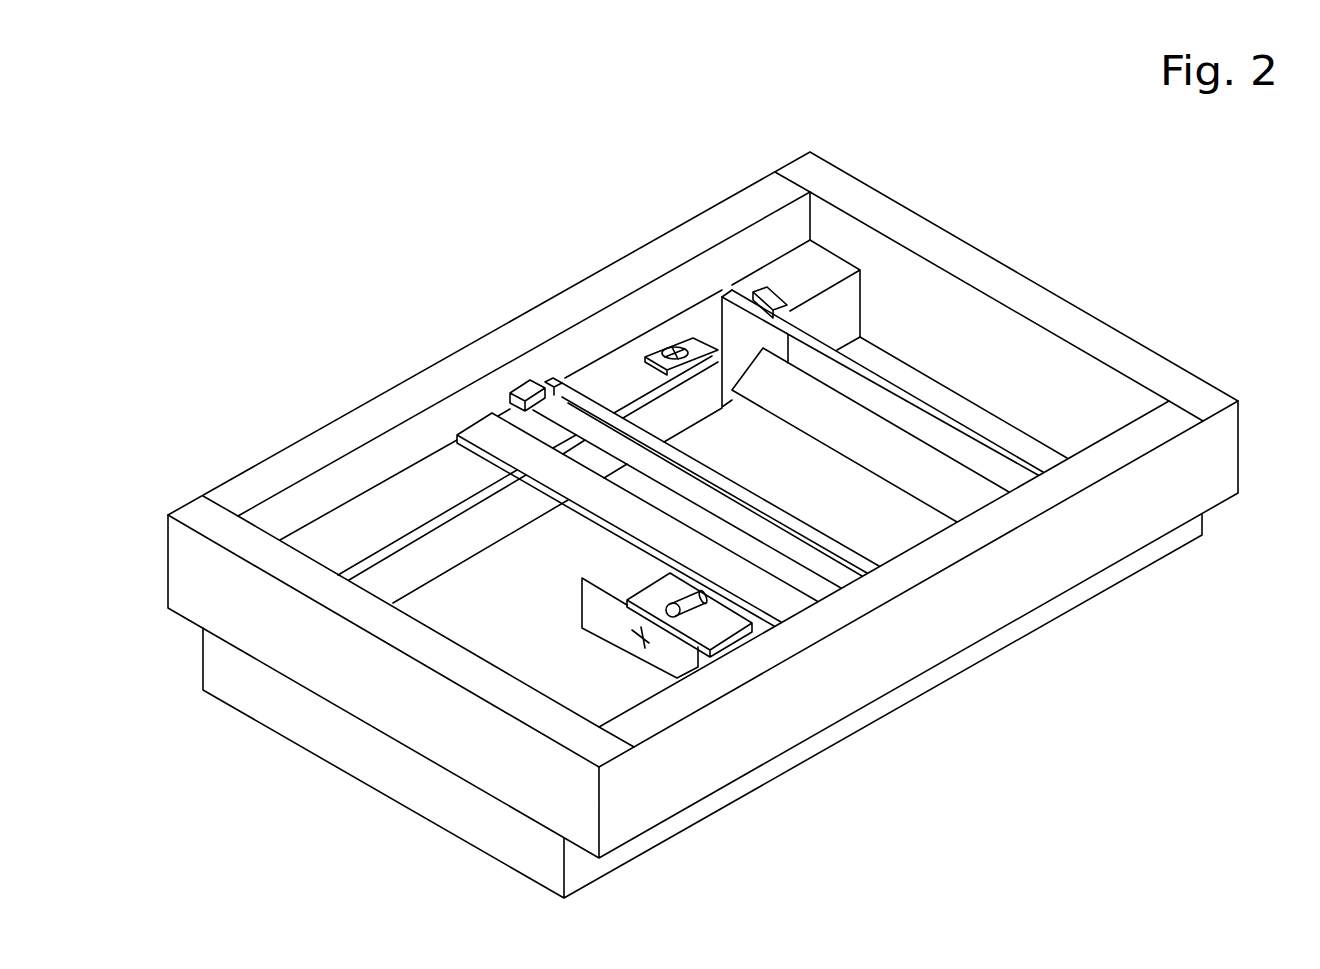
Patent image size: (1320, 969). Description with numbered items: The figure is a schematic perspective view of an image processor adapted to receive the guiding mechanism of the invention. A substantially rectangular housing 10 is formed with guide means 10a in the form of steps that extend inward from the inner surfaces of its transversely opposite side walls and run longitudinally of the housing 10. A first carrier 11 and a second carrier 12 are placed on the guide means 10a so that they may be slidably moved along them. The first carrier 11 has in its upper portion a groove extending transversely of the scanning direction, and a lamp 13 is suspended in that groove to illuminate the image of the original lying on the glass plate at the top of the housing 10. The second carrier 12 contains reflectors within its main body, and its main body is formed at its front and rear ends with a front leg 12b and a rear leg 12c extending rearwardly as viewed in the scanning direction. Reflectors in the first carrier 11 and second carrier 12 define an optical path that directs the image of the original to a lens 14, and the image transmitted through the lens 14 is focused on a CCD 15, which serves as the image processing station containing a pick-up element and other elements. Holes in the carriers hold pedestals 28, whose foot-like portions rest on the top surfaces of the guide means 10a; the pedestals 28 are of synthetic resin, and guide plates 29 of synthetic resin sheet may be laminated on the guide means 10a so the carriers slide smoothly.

The housing 10 is at (472, 337).
The guide means 10a is at (845, 316).
The first carrier 11 is at (775, 595).
The second carrier 12 is at (1040, 474).
The front leg 12b is at (697, 343).
The rear leg 12c is at (757, 294).
The lamp 13 is at (535, 430).
The lens 14 is at (690, 603).
The CCD 15 is at (605, 578).
The pedestal 28 is at (665, 352).
The guide plate 29 is at (812, 272).